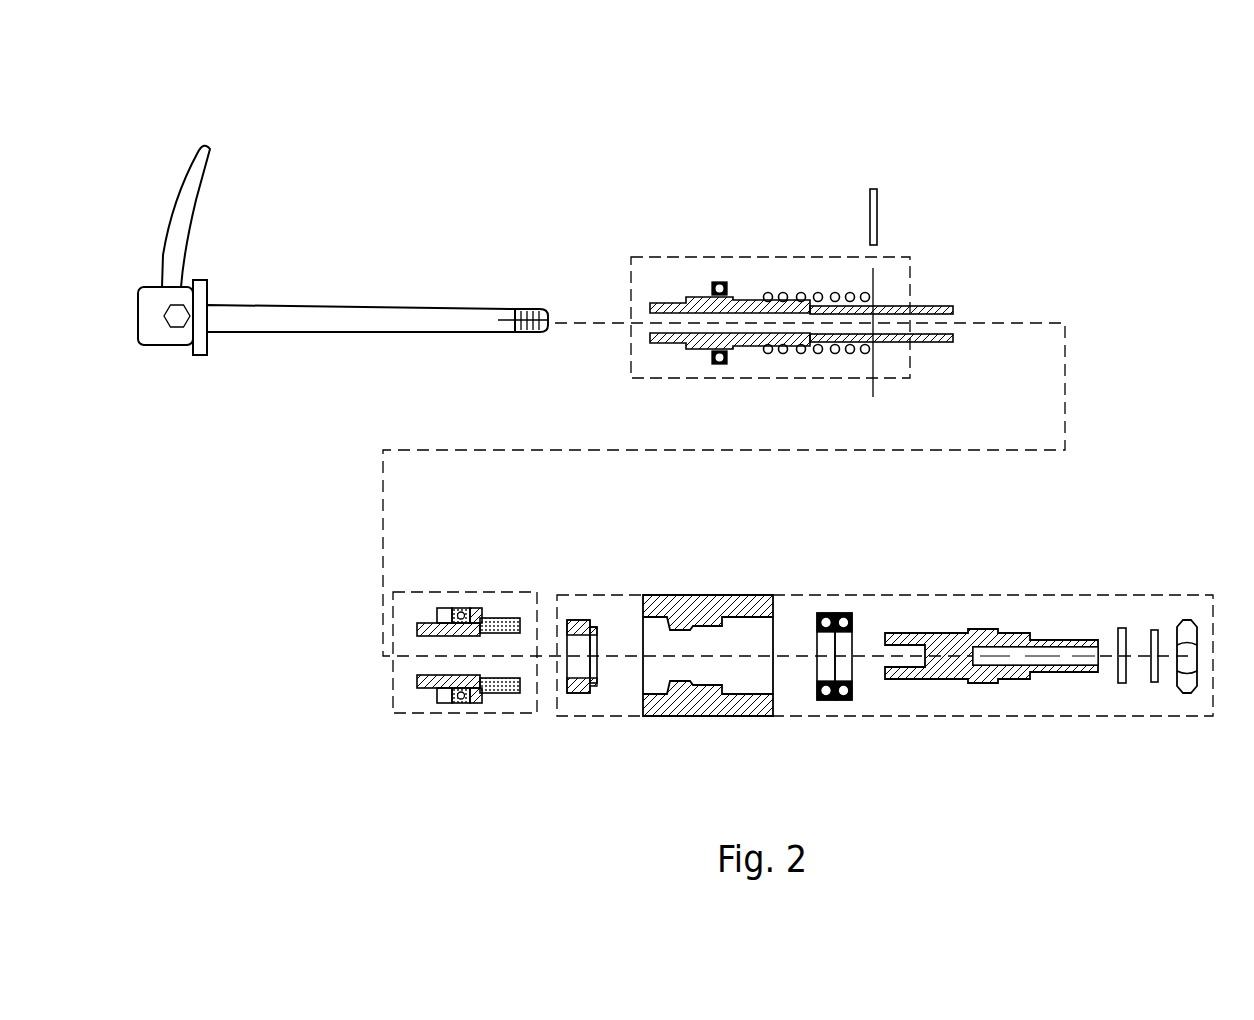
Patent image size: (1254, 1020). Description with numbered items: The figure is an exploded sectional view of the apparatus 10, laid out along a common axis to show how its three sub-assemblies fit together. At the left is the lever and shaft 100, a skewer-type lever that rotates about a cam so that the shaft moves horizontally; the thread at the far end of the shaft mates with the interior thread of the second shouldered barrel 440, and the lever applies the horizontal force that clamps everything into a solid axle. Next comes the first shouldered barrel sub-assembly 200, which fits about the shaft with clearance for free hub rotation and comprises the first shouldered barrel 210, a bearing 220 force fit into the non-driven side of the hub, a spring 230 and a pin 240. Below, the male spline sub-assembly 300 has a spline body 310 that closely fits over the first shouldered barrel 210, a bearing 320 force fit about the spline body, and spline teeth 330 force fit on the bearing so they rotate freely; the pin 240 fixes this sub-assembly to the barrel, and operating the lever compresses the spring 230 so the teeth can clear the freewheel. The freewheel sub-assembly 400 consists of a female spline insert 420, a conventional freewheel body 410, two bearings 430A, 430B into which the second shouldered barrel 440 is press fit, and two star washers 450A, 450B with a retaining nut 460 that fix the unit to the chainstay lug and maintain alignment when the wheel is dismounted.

The apparatus 10 is at (1166, 120).
The lever and shaft 100 is at (312, 318).
The first shouldered barrel sub-assembly 200 is at (647, 362).
The first shouldered barrel 210 is at (690, 305).
The bearing 220 is at (718, 282).
The spring 230 is at (783, 294).
The pin 240 is at (878, 205).
The male spline sub-assembly 300 is at (402, 703).
The spline body 310 is at (431, 617).
The bearing 320 is at (463, 697).
The spline teeth 330 is at (477, 697).
The freewheel sub-assembly 400 is at (1068, 705).
The freewheel body 410 is at (698, 605).
The female spline insert 420 is at (578, 617).
The bearing 430A is at (826, 613).
The bearing 430B is at (848, 613).
The second shouldered barrel 440 is at (1015, 632).
The star washer 450A is at (1122, 630).
The star washer 450B is at (1155, 630).
The retaining nut 460 is at (1188, 627).